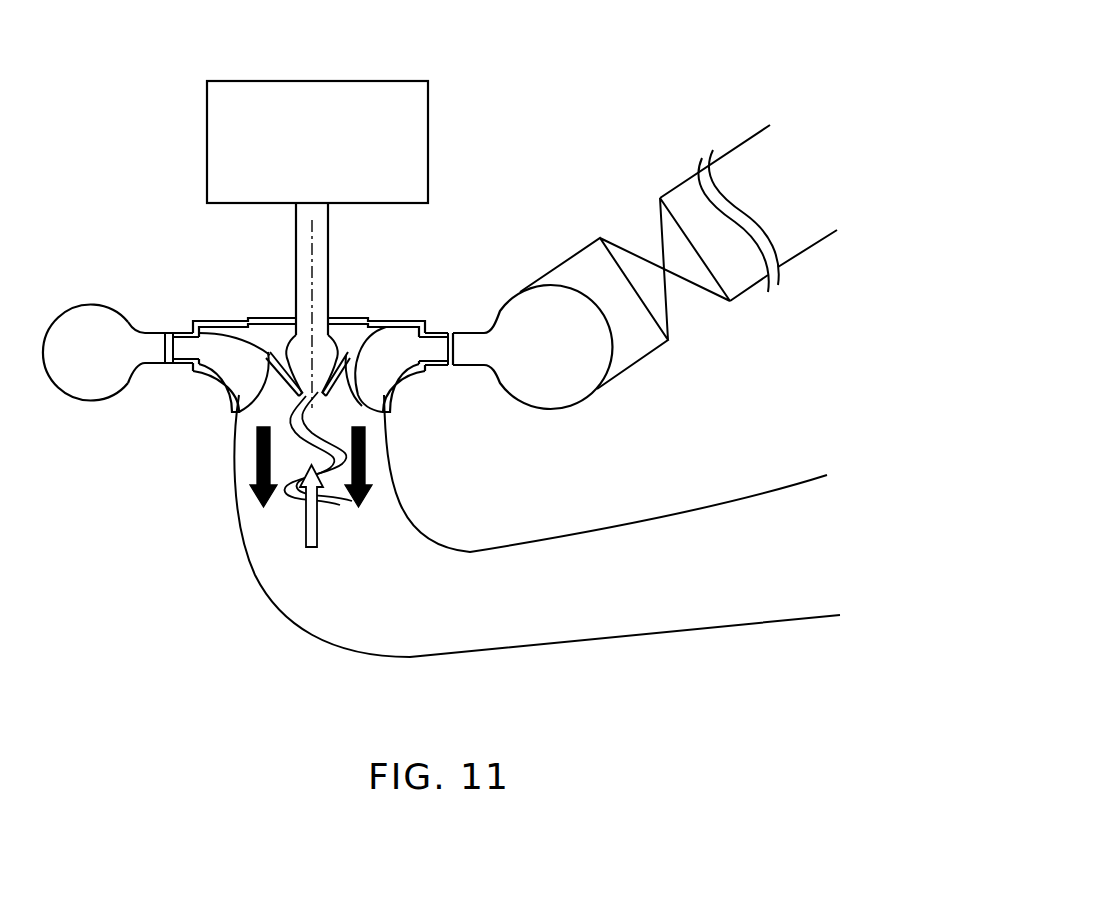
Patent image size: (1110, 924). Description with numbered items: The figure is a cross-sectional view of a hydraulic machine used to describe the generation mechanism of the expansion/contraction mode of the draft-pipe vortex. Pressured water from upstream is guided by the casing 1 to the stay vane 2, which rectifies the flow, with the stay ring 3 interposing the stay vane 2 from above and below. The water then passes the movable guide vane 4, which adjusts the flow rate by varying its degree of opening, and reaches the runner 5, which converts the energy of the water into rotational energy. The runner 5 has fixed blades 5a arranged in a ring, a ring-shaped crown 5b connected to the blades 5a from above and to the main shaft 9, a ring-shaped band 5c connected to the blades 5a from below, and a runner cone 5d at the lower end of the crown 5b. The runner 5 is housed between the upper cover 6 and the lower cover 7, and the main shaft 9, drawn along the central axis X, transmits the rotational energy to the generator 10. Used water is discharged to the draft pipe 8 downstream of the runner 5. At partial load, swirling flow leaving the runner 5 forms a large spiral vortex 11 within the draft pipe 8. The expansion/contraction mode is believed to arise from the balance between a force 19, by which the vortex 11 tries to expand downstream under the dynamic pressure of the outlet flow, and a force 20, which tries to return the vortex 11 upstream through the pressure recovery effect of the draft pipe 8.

The casing 1 is at (519, 322).
The stay vane 2 is at (470, 353).
The stay ring 3 is at (469, 333).
The guide vane 4 is at (443, 345).
The runner 5 is at (341, 342).
The blades 5a is at (202, 377).
The crown 5b is at (218, 320).
The band 5c is at (227, 397).
The runner cone 5d is at (282, 382).
The upper cover 6 is at (389, 318).
The lower cover 7 is at (410, 385).
The draft pipe 8 is at (390, 545).
The main shaft 9 is at (321, 223).
The generator 10 is at (413, 140).
The vortex 11 is at (308, 463).
The force 19 is at (367, 460).
The force 20 is at (305, 524).
The axis X is at (312, 240).